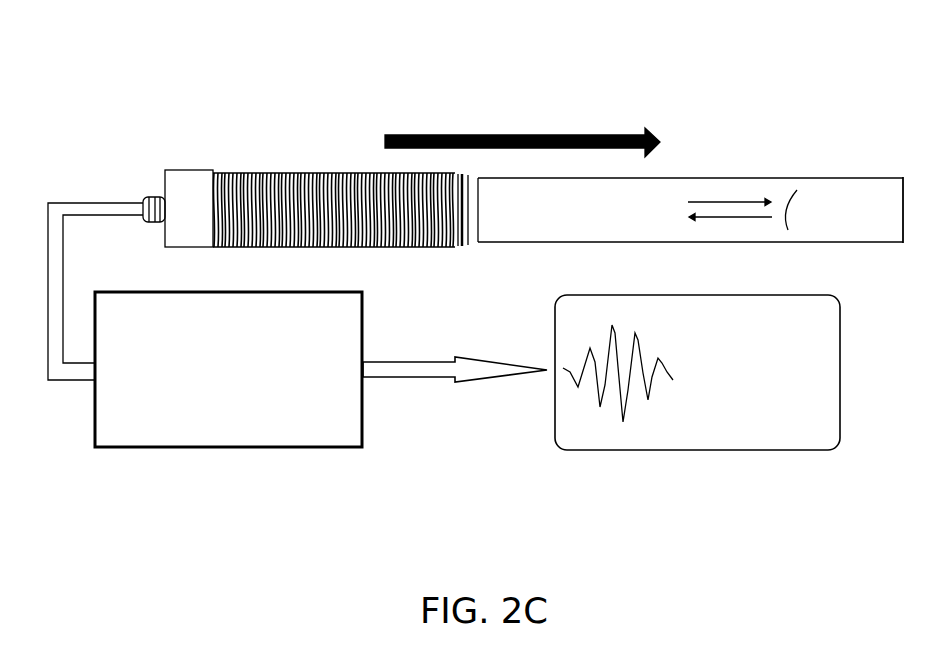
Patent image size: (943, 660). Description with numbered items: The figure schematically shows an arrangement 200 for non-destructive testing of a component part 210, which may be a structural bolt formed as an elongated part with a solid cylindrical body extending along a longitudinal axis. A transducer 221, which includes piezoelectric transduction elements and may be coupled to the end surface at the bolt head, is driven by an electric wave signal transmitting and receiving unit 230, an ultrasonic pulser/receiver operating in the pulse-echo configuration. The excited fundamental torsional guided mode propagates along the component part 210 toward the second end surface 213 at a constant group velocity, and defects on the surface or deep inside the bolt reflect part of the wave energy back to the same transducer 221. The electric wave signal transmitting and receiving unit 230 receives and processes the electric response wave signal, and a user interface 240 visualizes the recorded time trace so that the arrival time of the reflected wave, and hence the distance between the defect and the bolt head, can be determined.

The arrangement 200 is at (708, 83).
The component part 210 is at (722, 192).
The second end surface 213 is at (905, 202).
The transducer 221 is at (184, 190).
The electric wave signal transmitting and receiving unit 230 is at (268, 434).
The user interface 240 is at (622, 442).